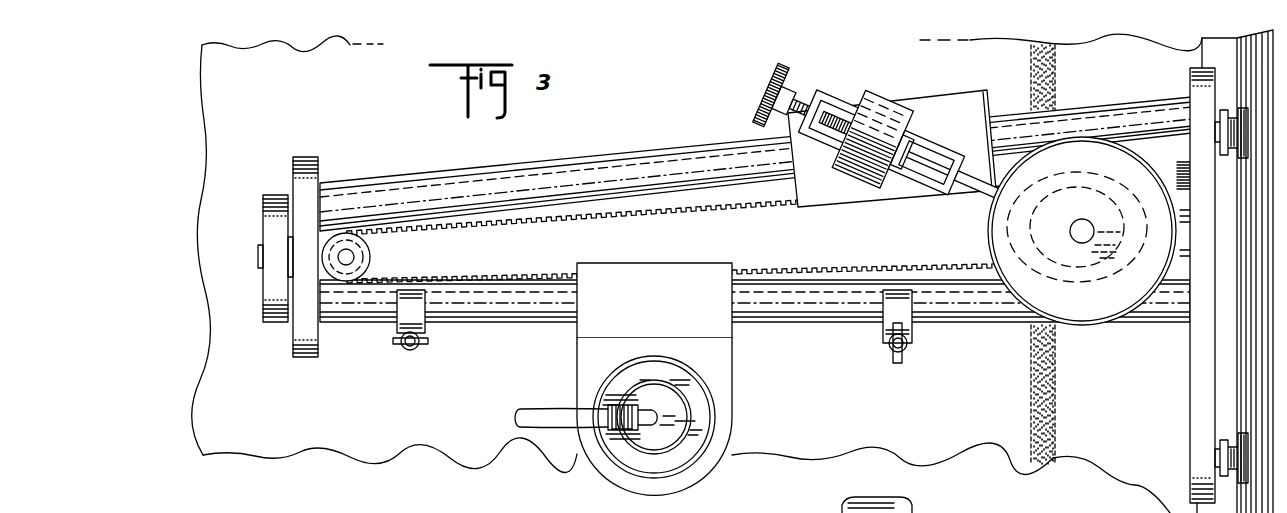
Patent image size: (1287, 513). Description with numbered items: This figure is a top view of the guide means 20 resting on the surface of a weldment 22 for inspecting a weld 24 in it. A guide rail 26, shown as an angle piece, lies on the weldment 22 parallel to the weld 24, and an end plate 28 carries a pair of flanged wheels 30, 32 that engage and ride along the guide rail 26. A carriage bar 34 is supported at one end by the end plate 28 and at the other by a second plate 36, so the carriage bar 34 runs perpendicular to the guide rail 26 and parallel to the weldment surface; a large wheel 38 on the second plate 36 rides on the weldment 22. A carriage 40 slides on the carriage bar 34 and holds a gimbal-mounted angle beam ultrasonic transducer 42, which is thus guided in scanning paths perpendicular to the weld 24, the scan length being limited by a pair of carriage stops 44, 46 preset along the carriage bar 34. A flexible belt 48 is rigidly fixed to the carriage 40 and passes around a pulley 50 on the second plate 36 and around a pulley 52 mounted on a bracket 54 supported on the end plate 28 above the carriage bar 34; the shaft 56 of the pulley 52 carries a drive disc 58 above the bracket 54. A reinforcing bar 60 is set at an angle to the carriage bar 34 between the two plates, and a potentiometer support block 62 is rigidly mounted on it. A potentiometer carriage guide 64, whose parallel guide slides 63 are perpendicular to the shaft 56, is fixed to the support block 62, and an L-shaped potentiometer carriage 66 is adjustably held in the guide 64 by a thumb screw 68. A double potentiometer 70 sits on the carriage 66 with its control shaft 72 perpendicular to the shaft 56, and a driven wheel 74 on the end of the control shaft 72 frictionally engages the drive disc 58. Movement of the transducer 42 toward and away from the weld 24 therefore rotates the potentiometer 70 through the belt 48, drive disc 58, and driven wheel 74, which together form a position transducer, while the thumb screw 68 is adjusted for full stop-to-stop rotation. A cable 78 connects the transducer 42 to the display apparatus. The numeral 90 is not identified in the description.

The guide means 20 is at (667, 95).
The weldment 22 is at (213, 66).
The weld 24 is at (1040, 405).
The guide rail 26 is at (1228, 55).
The end plate 28 is at (1197, 380).
The flanged wheel 30 is at (1237, 437).
The flanged wheel 32 is at (1226, 157).
The carriage bar 34 is at (503, 305).
The second plate 36 is at (305, 160).
The large wheel 38 is at (278, 200).
The carriage 40 is at (747, 401).
The angle beam ultrasonic transducer 42 is at (673, 394).
The carriage stop 44 is at (400, 348).
The carriage stop 46 is at (886, 350).
The flexible belt 48 is at (686, 214).
The pulley 50 is at (368, 251).
The pulley 52 is at (1115, 210).
The bracket 54 is at (1181, 180).
The shaft 56 is at (1082, 226).
The drive disc 58 is at (1000, 237).
The reinforcing bar 60 is at (497, 182).
The potentiometer support block 62 is at (970, 92).
The guide slides 63 is at (844, 108).
The potentiometer carriage guide 64 is at (815, 95).
The potentiometer carriage 66 is at (905, 143).
The thumb screw 68 is at (768, 88).
The double potentiometer 70 is at (873, 115).
The control shaft 72 is at (975, 165).
The driven wheel 74 is at (1020, 195).
The cable 78 is at (538, 416).
The brake assembly 90 is at (1145, 150).